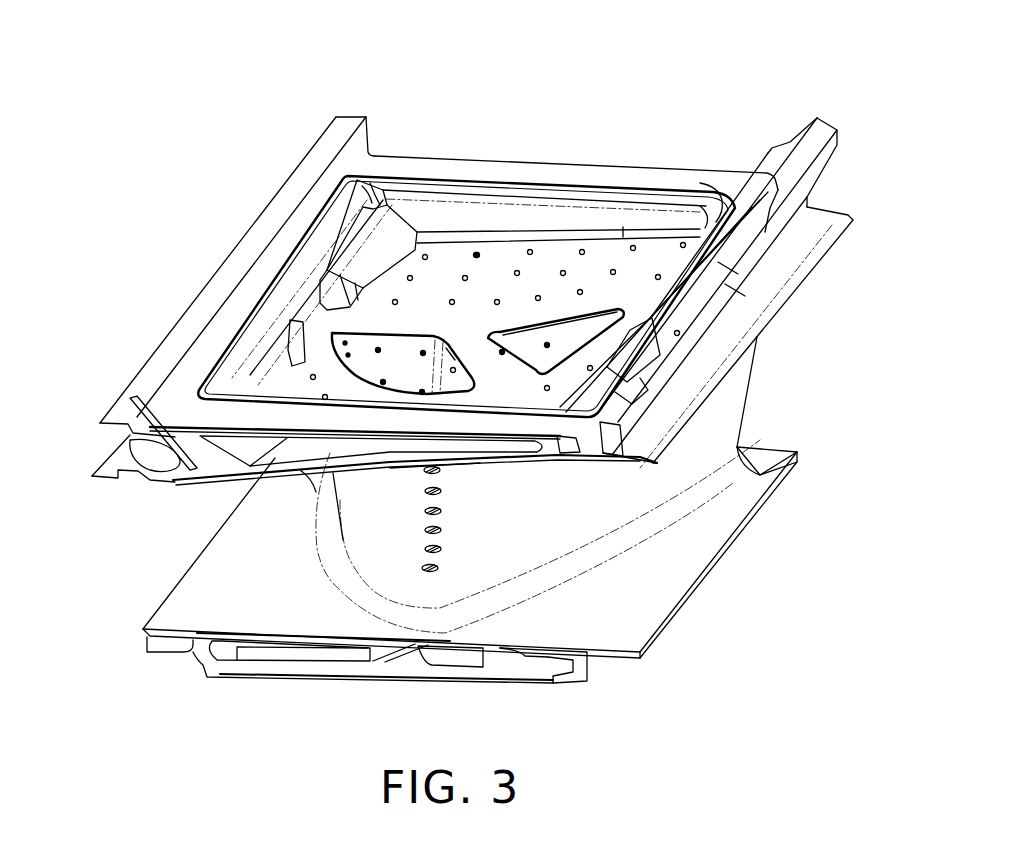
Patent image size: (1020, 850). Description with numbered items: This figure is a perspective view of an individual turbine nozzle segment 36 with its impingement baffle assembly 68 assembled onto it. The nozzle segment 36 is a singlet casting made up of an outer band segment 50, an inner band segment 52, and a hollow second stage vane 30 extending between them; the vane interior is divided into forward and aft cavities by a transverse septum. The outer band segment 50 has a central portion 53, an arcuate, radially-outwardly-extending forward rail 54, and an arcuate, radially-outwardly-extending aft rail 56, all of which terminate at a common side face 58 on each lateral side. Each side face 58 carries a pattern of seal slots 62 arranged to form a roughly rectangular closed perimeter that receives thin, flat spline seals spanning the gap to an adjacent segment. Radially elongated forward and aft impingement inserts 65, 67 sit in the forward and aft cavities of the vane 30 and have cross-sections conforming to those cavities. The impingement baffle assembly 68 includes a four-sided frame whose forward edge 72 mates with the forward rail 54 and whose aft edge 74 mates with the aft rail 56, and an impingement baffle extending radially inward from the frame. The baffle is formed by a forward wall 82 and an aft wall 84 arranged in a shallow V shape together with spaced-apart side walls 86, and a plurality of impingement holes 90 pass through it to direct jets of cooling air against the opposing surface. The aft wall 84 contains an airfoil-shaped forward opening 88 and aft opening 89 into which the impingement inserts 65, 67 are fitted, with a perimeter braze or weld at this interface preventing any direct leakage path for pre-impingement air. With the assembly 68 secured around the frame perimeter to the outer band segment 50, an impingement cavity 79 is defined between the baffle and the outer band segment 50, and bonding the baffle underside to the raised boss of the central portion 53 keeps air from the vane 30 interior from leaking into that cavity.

The second stage vane 30 is at (742, 382).
The nozzle segment 36 is at (656, 68).
The outer band segment 50 is at (183, 491).
The inner band segment 52 is at (771, 440).
The central portion 53 is at (337, 455).
The forward rail 54 is at (137, 418).
The aft rail 56 is at (826, 194).
The side face 58 is at (221, 484).
The seal slots 62 is at (177, 482).
The forward impingement insert 65 is at (370, 333).
The aft impingement insert 67 is at (540, 327).
The impingement baffle assembly 68 is at (388, 157).
The forward edge 72 is at (210, 271).
The aft edge 74 is at (716, 200).
The impingement cavity 79 is at (277, 455).
The forward wall 82 is at (360, 248).
The aft wall 84 is at (613, 253).
The side walls 86 is at (553, 196).
The forward opening 88 is at (447, 347).
The aft opening 89 is at (560, 317).
The impingement holes 90 is at (476, 255).